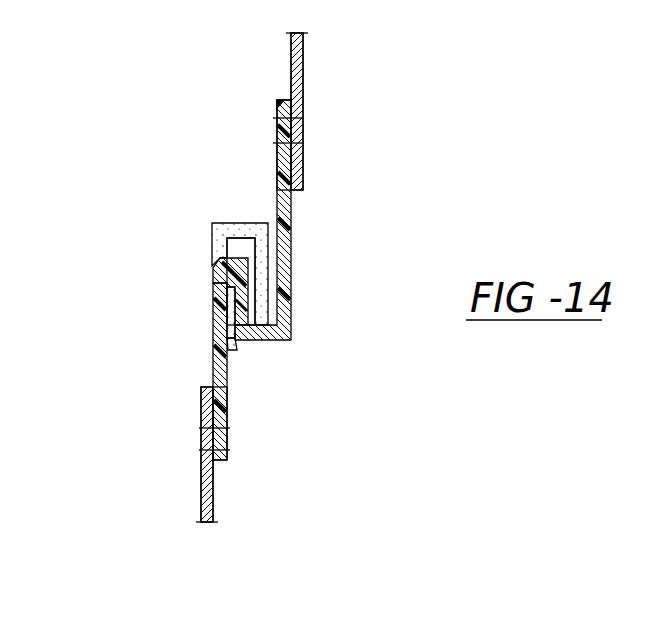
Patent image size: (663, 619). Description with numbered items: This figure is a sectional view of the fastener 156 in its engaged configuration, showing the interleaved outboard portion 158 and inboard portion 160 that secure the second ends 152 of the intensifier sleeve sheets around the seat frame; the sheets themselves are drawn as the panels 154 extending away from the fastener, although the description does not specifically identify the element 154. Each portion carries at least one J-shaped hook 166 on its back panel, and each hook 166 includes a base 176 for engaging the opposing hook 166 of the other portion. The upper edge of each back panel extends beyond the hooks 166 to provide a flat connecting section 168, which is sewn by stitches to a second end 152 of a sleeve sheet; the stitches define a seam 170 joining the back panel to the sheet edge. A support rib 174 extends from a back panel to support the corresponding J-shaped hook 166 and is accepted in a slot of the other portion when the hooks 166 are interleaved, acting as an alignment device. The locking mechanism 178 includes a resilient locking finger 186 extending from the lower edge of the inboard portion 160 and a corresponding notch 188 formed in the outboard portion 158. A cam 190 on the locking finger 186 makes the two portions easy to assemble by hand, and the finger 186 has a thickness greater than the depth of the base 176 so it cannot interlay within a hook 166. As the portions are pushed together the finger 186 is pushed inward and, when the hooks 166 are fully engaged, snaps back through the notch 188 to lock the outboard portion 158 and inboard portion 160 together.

The second end 152 is at (297, 190).
The glass panel edge 154 is at (294, 55).
The fastener 156 is at (176, 323).
The outboard portion 158 is at (213, 345).
The inboard portion 160 is at (291, 232).
The J-shaped hook 166 is at (267, 294).
The flat connecting section 168 is at (277, 155).
The seam 170 is at (304, 143).
The support rib 174 is at (237, 348).
The base 176 is at (237, 223).
The locking mechanism 178 is at (203, 258).
The locking finger 186 is at (213, 283).
The notch 188 is at (213, 292).
The cam 190 is at (213, 260).